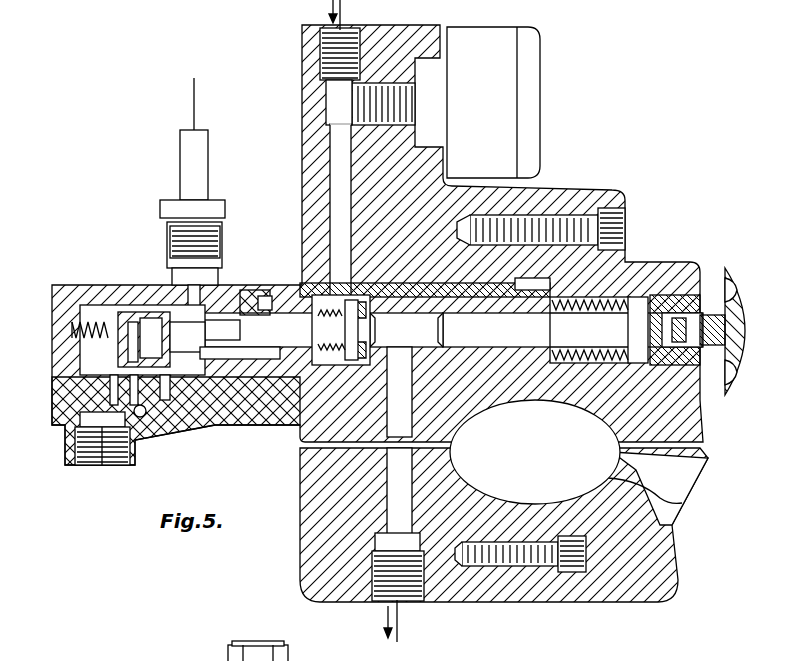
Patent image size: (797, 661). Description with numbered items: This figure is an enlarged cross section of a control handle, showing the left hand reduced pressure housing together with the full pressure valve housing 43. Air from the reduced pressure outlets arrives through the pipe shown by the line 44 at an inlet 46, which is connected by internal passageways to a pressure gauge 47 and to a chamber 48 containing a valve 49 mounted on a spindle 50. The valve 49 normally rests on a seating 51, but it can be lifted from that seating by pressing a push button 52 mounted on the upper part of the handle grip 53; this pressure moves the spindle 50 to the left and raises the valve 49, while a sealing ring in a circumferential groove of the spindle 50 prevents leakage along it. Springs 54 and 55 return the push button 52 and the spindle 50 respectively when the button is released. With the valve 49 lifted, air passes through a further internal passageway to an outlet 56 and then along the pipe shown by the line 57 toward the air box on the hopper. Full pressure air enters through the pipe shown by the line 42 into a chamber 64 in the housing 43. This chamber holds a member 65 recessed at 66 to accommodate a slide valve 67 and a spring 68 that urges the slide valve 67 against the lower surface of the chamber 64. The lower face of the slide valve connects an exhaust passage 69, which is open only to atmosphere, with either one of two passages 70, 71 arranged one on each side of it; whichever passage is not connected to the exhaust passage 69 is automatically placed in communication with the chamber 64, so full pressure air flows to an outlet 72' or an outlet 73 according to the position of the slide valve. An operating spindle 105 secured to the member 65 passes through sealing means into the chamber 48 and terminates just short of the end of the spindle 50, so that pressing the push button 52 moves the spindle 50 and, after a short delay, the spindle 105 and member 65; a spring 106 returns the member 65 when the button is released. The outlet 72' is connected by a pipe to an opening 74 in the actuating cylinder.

The pipe 42 is at (193, 110).
The valve housing 43 is at (88, 296).
The pipe 44 is at (345, 9).
The inlet 46 is at (323, 63).
The pressure gauge 47 is at (503, 72).
The chamber 48 is at (312, 278).
The valve 49 is at (312, 385).
The spindle 50 is at (497, 327).
The seating 51 is at (372, 350).
The push button 52 is at (745, 270).
The handle grip 53 is at (688, 432).
The spring 54 is at (612, 302).
The spring 55 is at (338, 322).
The outlet 56 is at (395, 600).
The pipe 57 is at (382, 636).
The chamber 64 is at (56, 352).
The member 65 is at (132, 305).
The recess 66 is at (216, 364).
The slide valve 67 is at (172, 378).
The spring 68 is at (165, 322).
The passage 69 is at (140, 418).
The passage 70 is at (106, 462).
The passage 71 is at (140, 412).
The outlet 72' is at (93, 456).
The outlet 73 is at (128, 438).
The opening 74 is at (277, 650).
The operating spindle 105 is at (254, 300).
The spring 106 is at (103, 322).